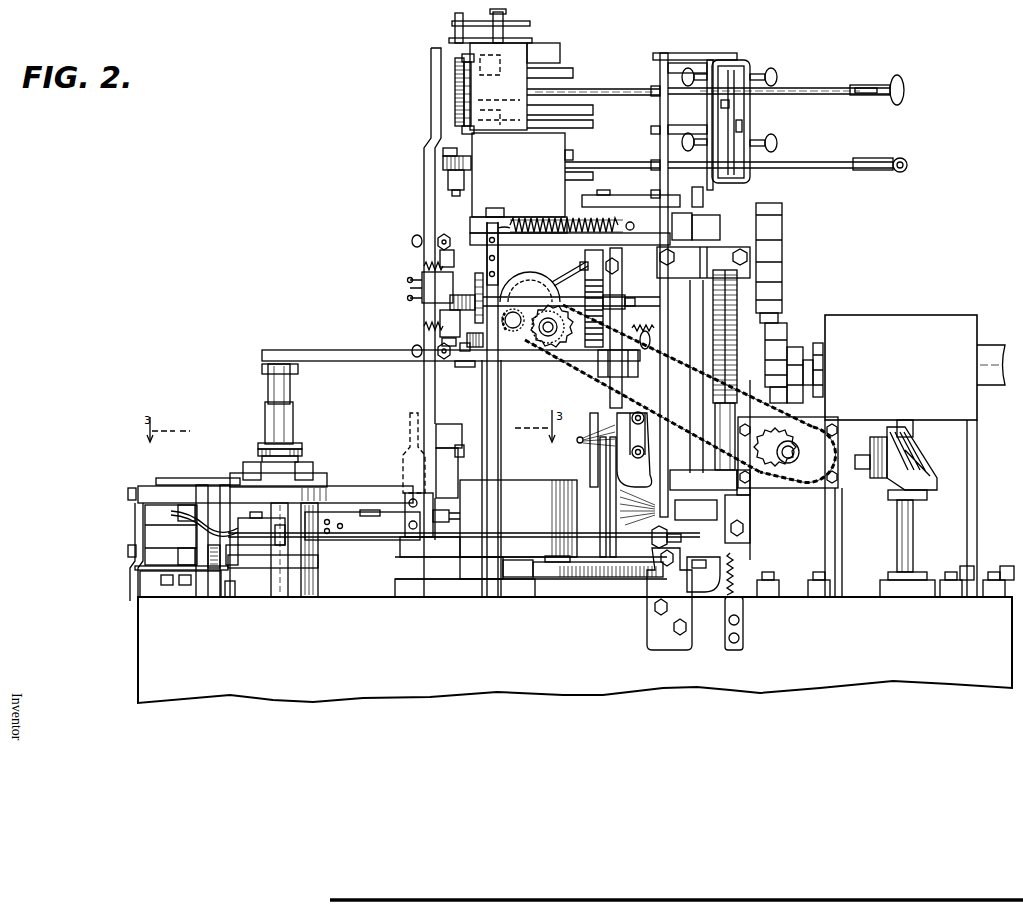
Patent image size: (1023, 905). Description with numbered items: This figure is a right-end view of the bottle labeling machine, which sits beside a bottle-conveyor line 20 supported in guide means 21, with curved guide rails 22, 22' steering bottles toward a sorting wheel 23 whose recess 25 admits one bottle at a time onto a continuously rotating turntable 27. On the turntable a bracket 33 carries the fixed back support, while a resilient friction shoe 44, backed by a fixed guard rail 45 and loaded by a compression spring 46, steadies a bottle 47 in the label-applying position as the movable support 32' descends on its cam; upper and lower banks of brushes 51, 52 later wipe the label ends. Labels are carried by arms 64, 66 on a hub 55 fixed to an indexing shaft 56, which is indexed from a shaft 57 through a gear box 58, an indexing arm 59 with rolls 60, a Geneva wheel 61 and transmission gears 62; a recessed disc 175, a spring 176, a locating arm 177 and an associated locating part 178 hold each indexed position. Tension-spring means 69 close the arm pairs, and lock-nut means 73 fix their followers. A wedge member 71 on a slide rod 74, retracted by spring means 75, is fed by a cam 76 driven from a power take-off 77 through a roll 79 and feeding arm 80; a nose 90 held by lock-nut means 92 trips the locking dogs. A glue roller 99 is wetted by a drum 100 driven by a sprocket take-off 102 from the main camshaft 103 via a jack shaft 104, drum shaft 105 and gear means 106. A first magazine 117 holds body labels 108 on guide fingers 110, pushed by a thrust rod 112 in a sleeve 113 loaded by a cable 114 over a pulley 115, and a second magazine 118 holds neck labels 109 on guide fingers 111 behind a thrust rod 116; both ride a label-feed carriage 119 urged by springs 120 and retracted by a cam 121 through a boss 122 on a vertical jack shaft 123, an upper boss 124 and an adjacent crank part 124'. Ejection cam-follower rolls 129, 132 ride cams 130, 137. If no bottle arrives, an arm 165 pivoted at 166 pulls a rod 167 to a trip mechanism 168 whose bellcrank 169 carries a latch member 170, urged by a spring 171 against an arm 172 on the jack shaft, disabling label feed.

The bottle-conveyor line 20 is at (154, 578).
The guide means 21 is at (222, 593).
The curved guide rail 22 is at (126, 544).
The curved guide rail 22' is at (200, 541).
The sorting wheel 23 is at (280, 540).
The recess 25 is at (345, 512).
The turntable 27 is at (532, 590).
The movable support 32' is at (487, 448).
The bracket 33 is at (565, 565).
The resilient friction shoe 44 is at (430, 500).
The fixed guard rail 45 is at (548, 490).
The compression spring 46 is at (446, 521).
The bottle 47 is at (404, 463).
The upper bank of brushes 51 is at (583, 436).
The lower bank of brushes 52 is at (599, 488).
The hub 55 is at (423, 291).
The indexing shaft 56 is at (528, 280).
The shaft 57 is at (989, 352).
The gear box 58 is at (868, 325).
The indexing arm 59 is at (795, 348).
The rolls 60 is at (806, 356).
The Geneva wheel 61 is at (781, 242).
The transmission gears 62 is at (712, 346).
The label-supporting arm 64 is at (443, 165).
The label-supporting arm 66 is at (422, 392).
The tension-spring means 69 is at (411, 241).
The wedge member 71 is at (466, 362).
The lock-nut means 73 is at (444, 238).
The slide rod 74 is at (518, 356).
The spring means 75 is at (640, 328).
The cam 76 is at (605, 471).
The power take-off 77 is at (897, 496).
The roll 79 is at (640, 468).
The feeding arm 80 is at (634, 376).
The nose 90 is at (424, 331).
The lock-nut means 92 is at (431, 145).
The glue roller 99 is at (488, 240).
The wetting drum 100 is at (518, 280).
The sprocket take-off 102 is at (826, 421).
The main camshaft 103 is at (848, 464).
The jack shaft 104 is at (548, 322).
The drum shaft 105 is at (518, 292).
The gear means 106 is at (526, 330).
The body labels 108 is at (455, 85).
The neck labels 109 is at (449, 178).
The guide fingers 110 is at (458, 115).
The guide fingers 111 is at (443, 154).
The thrust rod 112 is at (607, 92).
The sleeve 113 is at (670, 72).
The cable 114 is at (806, 90).
The pulley 115 is at (877, 84).
The thrust rod 116 is at (614, 166).
The first magazine 117 is at (522, 55).
The second magazine 118 is at (560, 158).
The label-feed carriage 119 is at (480, 218).
The springs 120 is at (536, 219).
The cam 121 is at (699, 490).
The boss 122 is at (745, 493).
The jack shaft 123 is at (702, 398).
The boss 124 is at (745, 214).
The block 124' is at (664, 226).
The cam-follower roll 129 is at (246, 468).
The cam 130 is at (262, 456).
The cam-follower roll 132 is at (283, 441).
The stationary cam 137 is at (262, 447).
The arm 165 is at (184, 515).
The pivot 166 is at (250, 541).
The rod 167 is at (585, 564).
The trip mechanism 168 is at (670, 578).
The bellcrank 169 is at (710, 573).
The latch member 170 is at (729, 590).
The spring 171 is at (742, 590).
The arm 172 is at (716, 540).
The disc 175 is at (596, 261).
The spring 176 is at (624, 264).
The locating arm 177 is at (626, 304).
The lever 178 is at (574, 272).